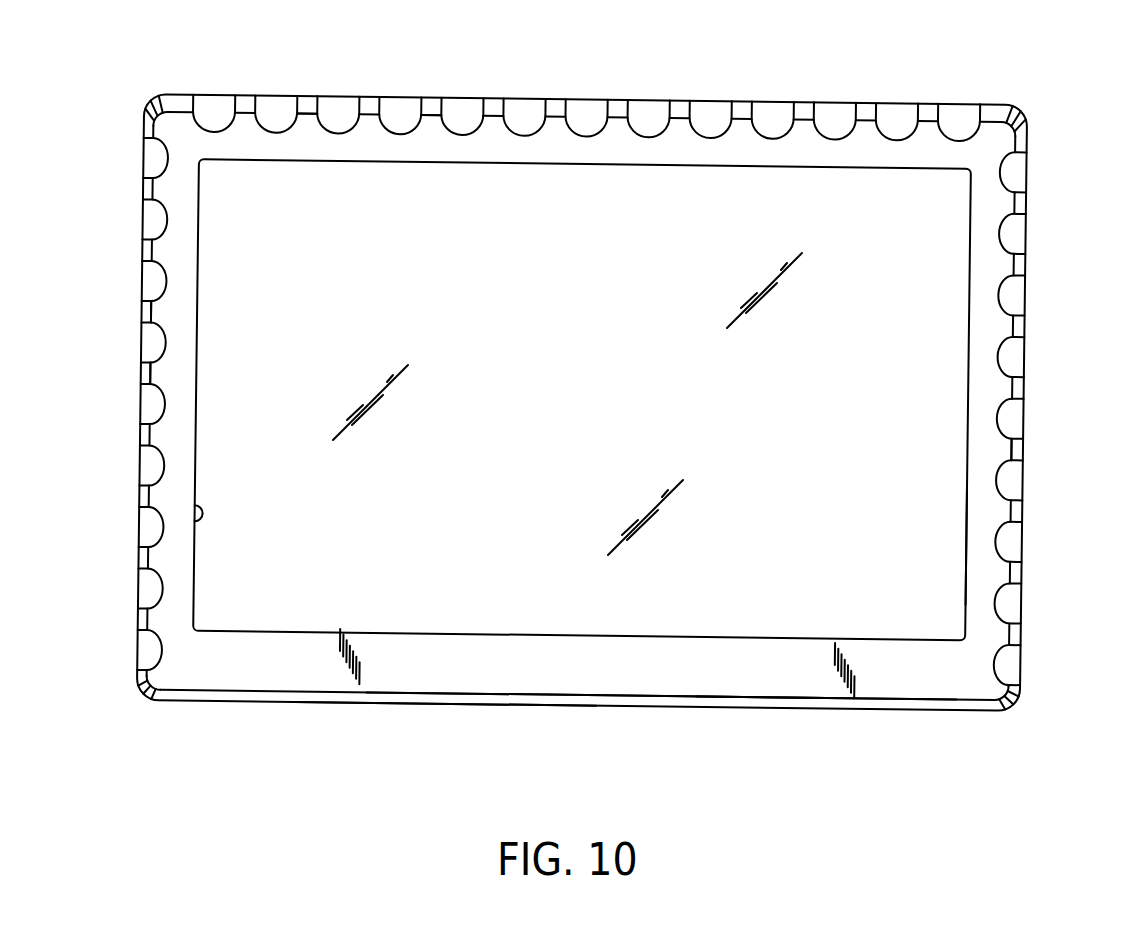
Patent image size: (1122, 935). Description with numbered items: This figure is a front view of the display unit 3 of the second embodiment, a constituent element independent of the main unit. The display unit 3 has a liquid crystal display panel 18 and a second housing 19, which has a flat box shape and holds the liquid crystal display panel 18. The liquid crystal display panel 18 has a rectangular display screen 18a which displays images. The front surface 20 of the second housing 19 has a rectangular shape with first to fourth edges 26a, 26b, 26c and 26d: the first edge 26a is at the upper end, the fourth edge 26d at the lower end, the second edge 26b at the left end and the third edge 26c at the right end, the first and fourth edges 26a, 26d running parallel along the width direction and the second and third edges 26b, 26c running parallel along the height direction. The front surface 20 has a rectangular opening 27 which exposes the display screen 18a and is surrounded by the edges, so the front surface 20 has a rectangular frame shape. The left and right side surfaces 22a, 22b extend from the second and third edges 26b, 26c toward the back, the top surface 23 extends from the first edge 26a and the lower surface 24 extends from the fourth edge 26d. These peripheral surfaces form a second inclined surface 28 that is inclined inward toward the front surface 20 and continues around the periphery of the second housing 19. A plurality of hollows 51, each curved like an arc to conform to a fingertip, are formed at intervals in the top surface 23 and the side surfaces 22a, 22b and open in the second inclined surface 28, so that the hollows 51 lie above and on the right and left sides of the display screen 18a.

The display unit 3 is at (868, 105).
The liquid crystal display panel 18 is at (698, 200).
The display screen 18a is at (567, 404).
The second housing 19 is at (989, 250).
The front surface 20 is at (620, 670).
The left side surface 22a is at (148, 370).
The right side surface 22b is at (1020, 448).
The top surface 23 is at (433, 112).
The lower surface 24 is at (418, 698).
The first edge 26a is at (308, 113).
The second edge 26b is at (147, 313).
The third edge 26c is at (967, 536).
The fourth edge 26d is at (800, 698).
The rectangular opening 27 is at (203, 520).
The second inclined surface 28 is at (1025, 143).
The hollows 51 is at (587, 135).